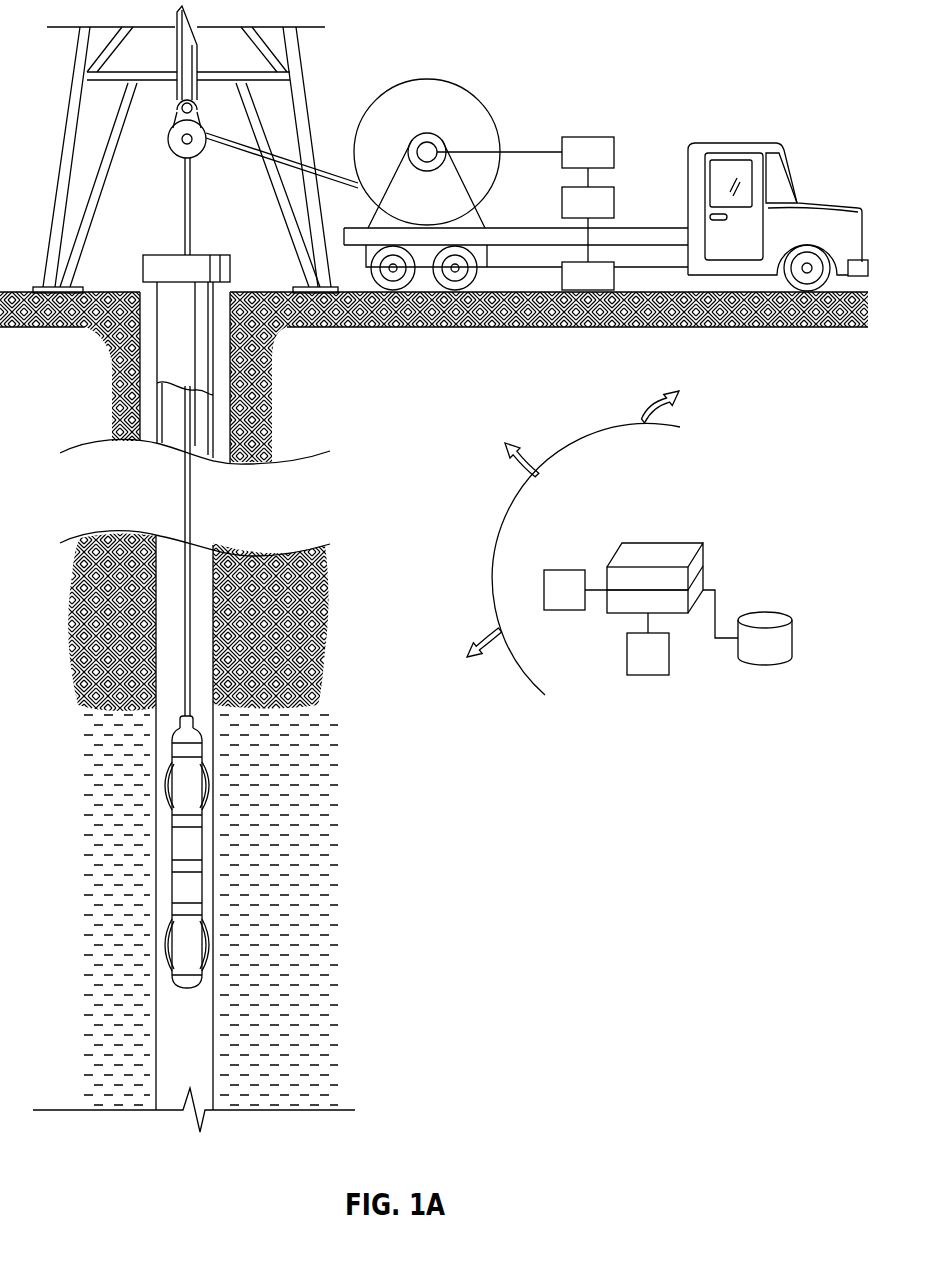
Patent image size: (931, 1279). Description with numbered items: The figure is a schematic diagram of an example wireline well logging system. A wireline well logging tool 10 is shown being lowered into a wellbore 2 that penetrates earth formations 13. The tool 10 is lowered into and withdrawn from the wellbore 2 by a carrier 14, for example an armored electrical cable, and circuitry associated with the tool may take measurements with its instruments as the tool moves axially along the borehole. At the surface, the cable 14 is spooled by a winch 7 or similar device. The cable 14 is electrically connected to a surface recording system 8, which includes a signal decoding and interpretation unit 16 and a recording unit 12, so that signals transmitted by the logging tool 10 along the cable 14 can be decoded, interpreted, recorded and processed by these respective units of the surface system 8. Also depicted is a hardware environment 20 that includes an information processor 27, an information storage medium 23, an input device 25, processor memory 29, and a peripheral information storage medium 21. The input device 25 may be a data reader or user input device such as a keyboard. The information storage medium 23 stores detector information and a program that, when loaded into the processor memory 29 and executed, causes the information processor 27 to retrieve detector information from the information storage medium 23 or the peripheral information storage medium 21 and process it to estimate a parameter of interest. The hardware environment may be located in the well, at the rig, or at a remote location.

The wellbore 2 is at (207, 1041).
The winch 7 is at (429, 78).
The surface recording system 8 is at (606, 154).
The wireline well logging tool 10 is at (213, 844).
The recording unit 12 is at (614, 203).
The earth formations 13 is at (365, 636).
The carrier 14 is at (190, 228).
The signal decoding and interpretation unit 16 is at (589, 137).
The hardware environment 20 is at (712, 470).
The peripheral information storage medium 21 is at (795, 638).
The information storage medium 23 is at (567, 570).
The input device 25 is at (648, 675).
The information processor 27 is at (705, 548).
The processor memory 29 is at (705, 582).